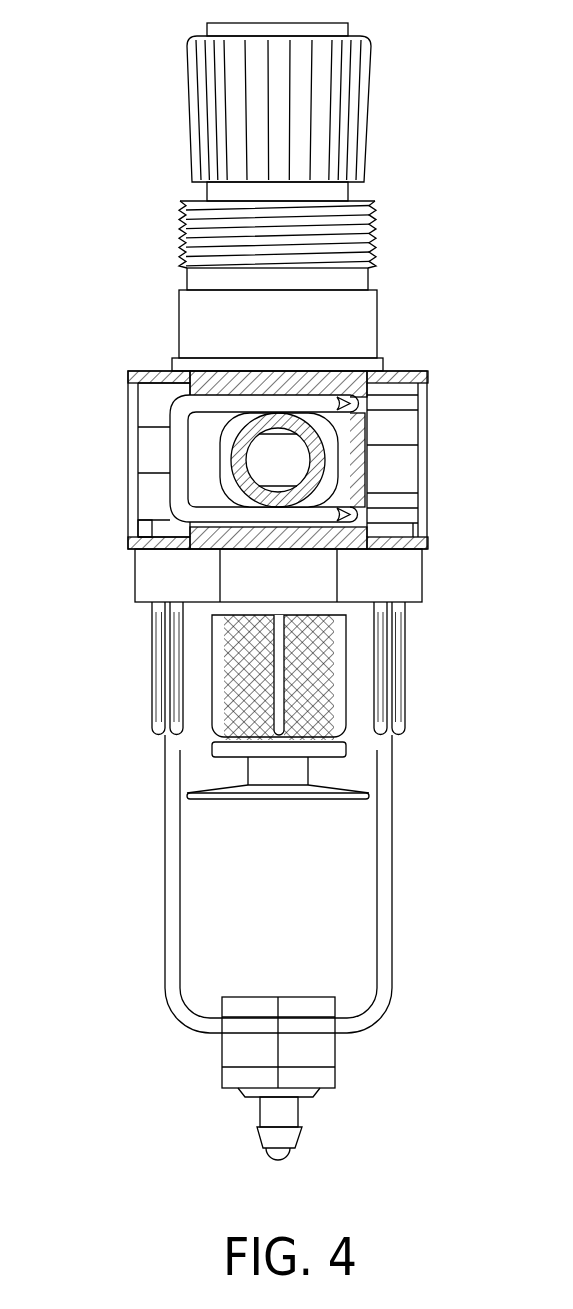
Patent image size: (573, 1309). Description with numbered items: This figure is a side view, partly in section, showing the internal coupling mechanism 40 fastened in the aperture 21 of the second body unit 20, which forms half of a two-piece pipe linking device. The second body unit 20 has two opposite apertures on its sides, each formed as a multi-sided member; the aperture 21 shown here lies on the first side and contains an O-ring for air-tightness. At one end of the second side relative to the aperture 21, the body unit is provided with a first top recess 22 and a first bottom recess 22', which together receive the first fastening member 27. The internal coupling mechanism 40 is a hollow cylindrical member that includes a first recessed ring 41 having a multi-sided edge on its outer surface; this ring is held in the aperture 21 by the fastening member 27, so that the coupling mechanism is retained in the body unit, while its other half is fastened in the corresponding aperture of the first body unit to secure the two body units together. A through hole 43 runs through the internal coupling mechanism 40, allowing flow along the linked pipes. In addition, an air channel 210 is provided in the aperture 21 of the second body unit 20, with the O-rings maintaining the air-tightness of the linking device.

The second body unit 20 is at (410, 352).
The aperture 21 is at (323, 500).
The first top recess 22 is at (413, 457).
The first bottom recess 22' is at (416, 515).
The first fastening member 27 is at (177, 455).
The internal coupling mechanism 40 is at (323, 465).
The first recessed ring 41 is at (327, 478).
The through hole 43 is at (275, 483).
The air channel 210 is at (275, 452).